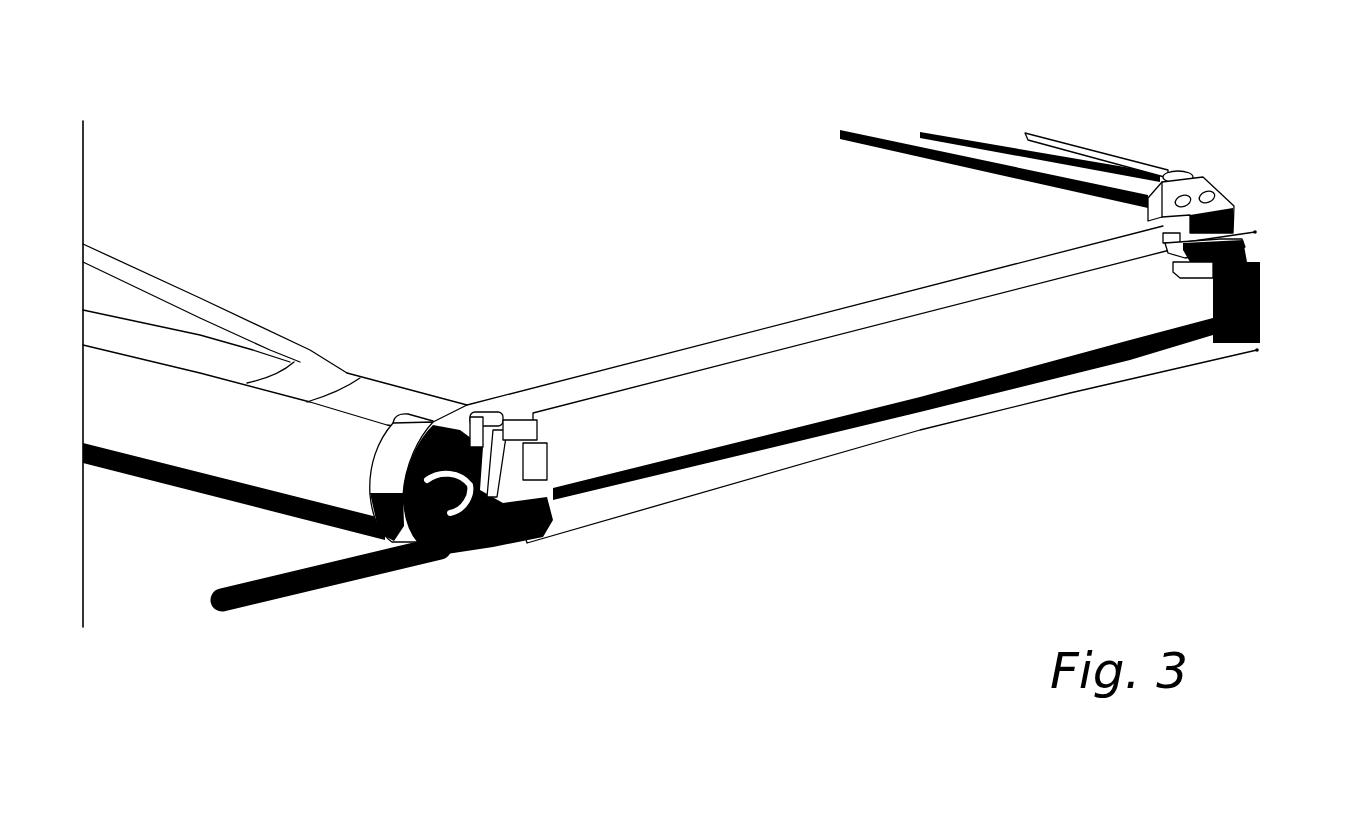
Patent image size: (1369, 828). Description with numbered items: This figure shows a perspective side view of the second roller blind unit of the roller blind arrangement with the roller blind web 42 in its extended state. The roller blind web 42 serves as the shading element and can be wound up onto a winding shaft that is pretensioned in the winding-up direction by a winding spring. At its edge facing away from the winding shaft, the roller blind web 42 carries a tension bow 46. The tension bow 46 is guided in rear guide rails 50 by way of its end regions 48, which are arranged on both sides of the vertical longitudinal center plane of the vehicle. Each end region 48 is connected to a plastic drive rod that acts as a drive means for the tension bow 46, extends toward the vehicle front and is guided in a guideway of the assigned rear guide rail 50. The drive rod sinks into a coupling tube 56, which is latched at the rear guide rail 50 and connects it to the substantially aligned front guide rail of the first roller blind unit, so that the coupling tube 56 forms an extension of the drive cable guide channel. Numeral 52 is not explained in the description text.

The roller blind web 42 is at (840, 278).
The tension bow 46 is at (1078, 147).
The end region 48 is at (1260, 283).
The rear guide rail 50 is at (777, 463).
The drive rail 52 is at (983, 398).
The coupling tube 56 is at (317, 580).